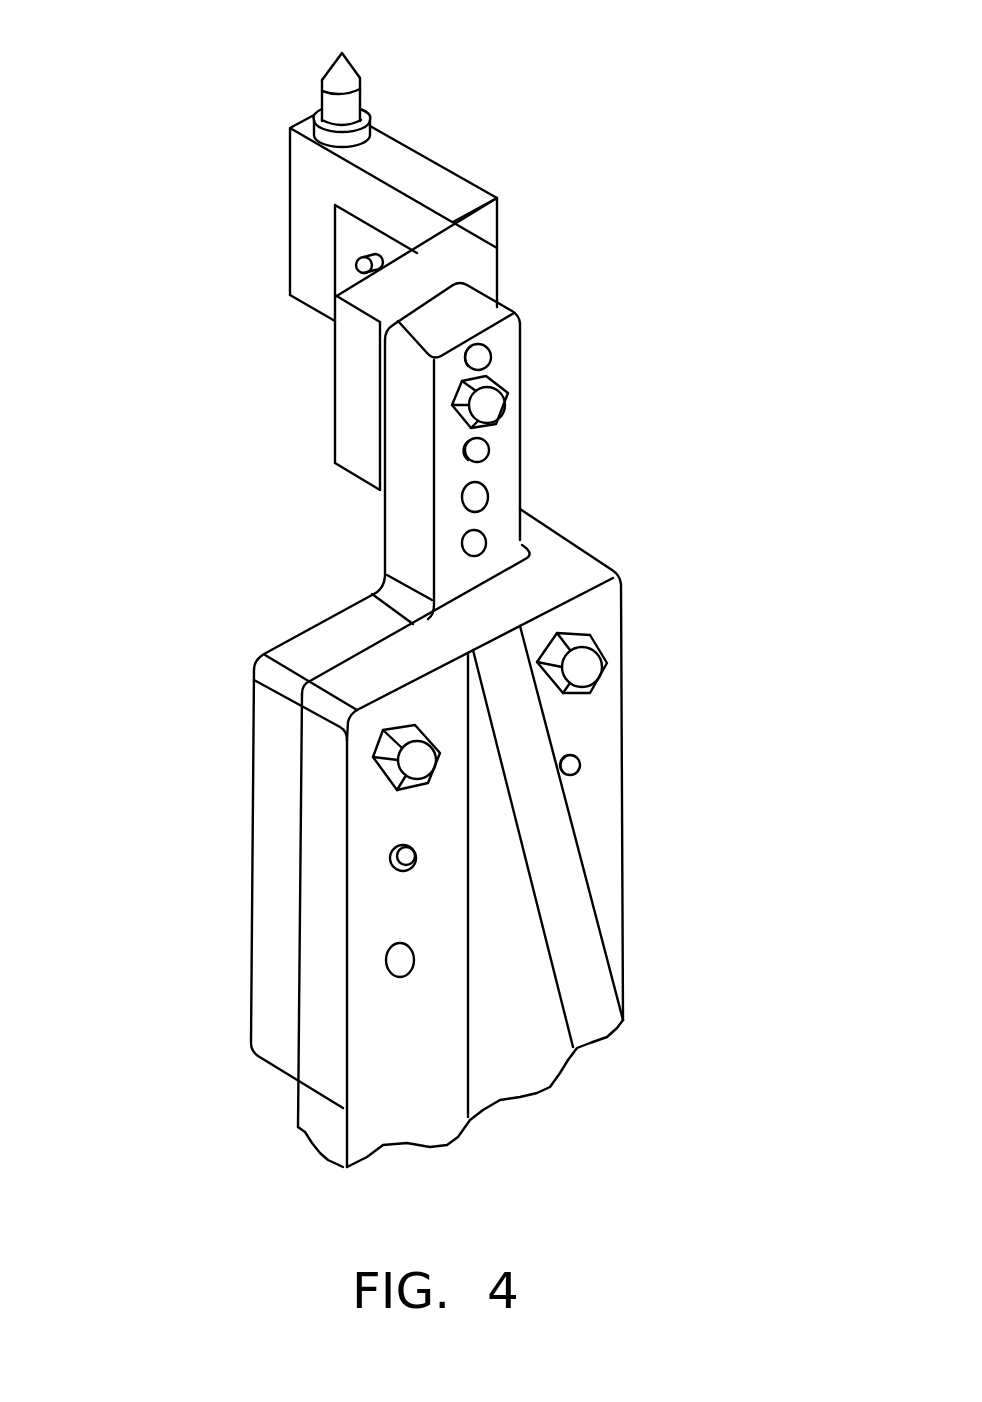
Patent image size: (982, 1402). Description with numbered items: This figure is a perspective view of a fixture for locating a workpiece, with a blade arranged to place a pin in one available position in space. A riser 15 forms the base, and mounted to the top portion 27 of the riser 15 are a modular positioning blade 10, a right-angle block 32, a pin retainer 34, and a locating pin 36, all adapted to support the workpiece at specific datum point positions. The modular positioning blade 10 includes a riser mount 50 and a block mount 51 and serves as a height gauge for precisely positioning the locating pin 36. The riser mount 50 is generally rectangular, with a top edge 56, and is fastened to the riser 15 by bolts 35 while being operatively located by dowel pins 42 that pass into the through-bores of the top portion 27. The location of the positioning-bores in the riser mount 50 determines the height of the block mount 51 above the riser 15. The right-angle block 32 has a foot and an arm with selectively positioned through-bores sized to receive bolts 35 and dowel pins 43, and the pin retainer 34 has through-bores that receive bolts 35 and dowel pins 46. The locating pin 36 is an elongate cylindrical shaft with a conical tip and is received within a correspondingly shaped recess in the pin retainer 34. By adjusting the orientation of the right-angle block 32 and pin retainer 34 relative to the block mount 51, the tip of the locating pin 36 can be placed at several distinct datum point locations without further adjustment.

The modular positioning blade 10 is at (270, 890).
The riser 15 is at (620, 790).
The top portion 27 is at (327, 1075).
The right-angle block 32 is at (480, 255).
The pin retainer 34 is at (432, 170).
The bolt 35 is at (496, 407).
The locating pin 36 is at (362, 92).
The dowel pin 42 is at (581, 757).
The dowel pin 43 is at (483, 353).
The dowel pin 46 is at (368, 263).
The riser mount 50 is at (268, 762).
The block mount 51 is at (513, 468).
The top edge 56 is at (323, 643).